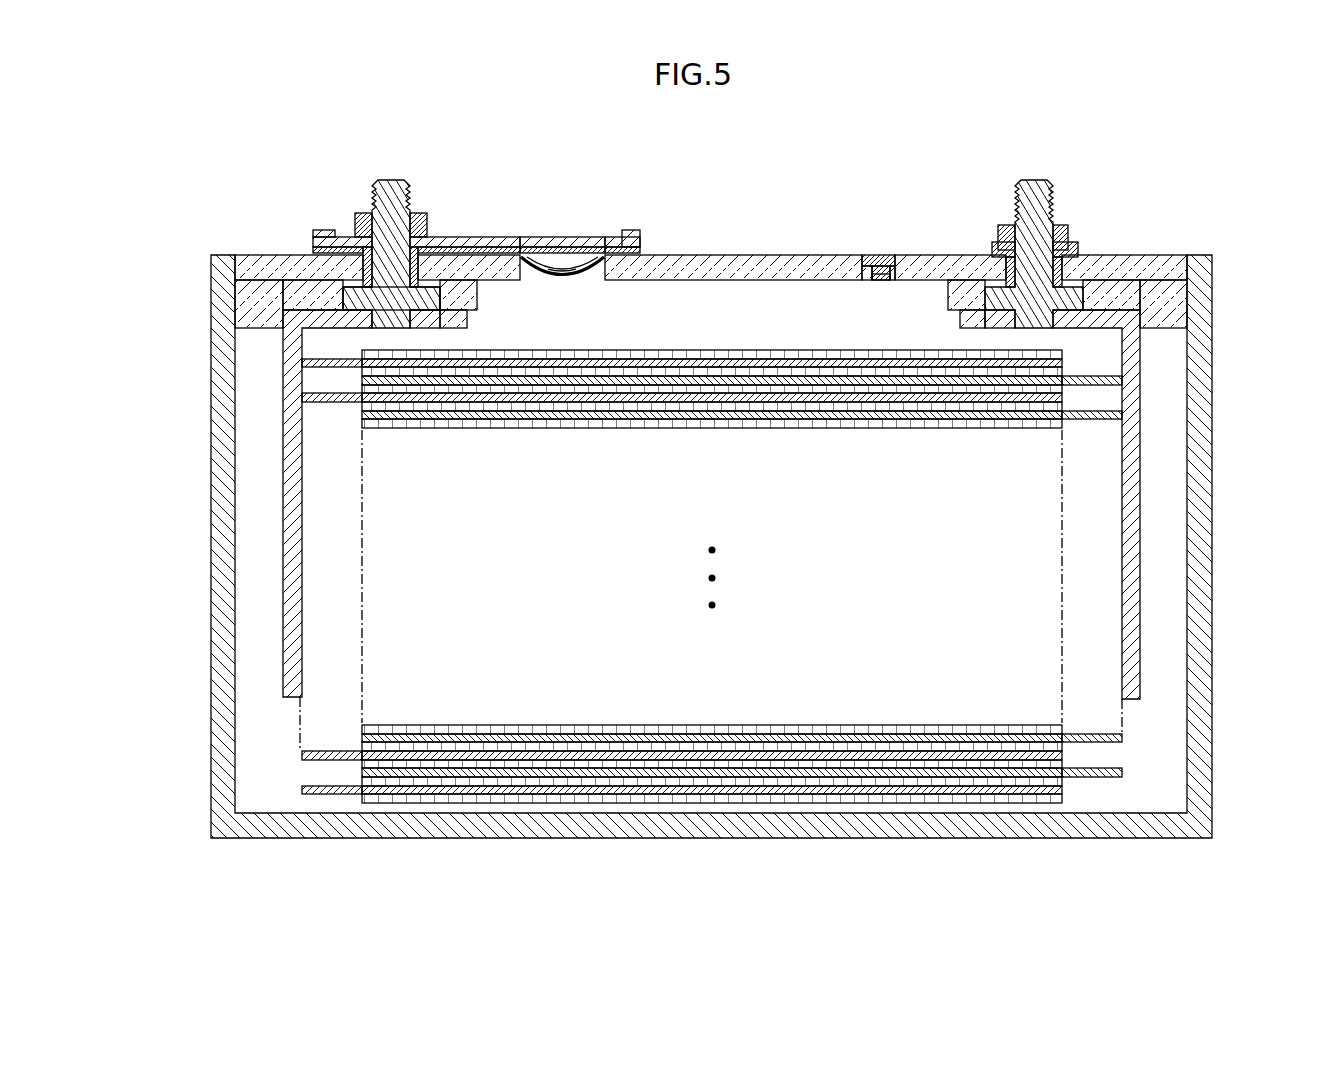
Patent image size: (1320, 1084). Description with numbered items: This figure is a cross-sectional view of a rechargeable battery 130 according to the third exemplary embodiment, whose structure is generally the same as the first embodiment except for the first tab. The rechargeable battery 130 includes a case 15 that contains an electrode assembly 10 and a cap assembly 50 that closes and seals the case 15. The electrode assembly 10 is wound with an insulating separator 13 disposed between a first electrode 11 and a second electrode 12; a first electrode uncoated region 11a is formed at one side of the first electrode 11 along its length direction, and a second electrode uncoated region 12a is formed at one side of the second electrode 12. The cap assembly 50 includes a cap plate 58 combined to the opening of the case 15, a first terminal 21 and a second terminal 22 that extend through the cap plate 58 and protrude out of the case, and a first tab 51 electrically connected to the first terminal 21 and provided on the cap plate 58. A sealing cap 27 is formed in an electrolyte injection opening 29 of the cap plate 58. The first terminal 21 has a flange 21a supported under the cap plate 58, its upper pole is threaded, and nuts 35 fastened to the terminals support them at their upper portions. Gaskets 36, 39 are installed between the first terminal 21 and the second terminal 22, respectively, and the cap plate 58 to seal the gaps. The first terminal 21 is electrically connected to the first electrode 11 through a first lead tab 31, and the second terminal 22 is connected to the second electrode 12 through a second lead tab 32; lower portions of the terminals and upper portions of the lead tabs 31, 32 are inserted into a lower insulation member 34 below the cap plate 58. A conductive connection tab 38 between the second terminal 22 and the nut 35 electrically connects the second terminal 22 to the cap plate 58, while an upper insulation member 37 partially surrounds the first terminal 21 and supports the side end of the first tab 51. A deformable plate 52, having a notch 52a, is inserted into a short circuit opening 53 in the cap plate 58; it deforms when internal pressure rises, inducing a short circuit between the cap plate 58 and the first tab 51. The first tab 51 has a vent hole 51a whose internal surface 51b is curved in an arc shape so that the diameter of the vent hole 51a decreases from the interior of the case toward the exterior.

The rechargeable battery 130 is at (815, 157).
The electrode assembly 10 is at (787, 812).
The first electrode 11 is at (452, 770).
The first electrode uncoated region 11a is at (318, 794).
The second electrode 12 is at (948, 777).
The second electrode uncoated region 12a is at (1093, 777).
The separator 13 is at (668, 776).
The case 15 is at (1200, 520).
The first terminal 21 is at (392, 180).
The flange 21a is at (440, 300).
The second terminal 22 is at (1033, 180).
The sealing cap 27 is at (880, 257).
The electrolyte injection opening 29 is at (880, 282).
The first lead tab 31 is at (294, 545).
The second lead tab 32 is at (1135, 630).
The lower insulation member 34 is at (242, 300).
The nut 35 is at (420, 215).
The gasket 36 is at (365, 270).
The upper insulation member 37 is at (632, 232).
The connection tab 38 is at (1068, 248).
The gasket 39 is at (1005, 272).
The cap assembly 50 is at (723, 250).
The first tab 51 is at (478, 238).
The vent hole 51a is at (578, 245).
The internal surface 51b is at (542, 252).
The deformable plate 52 is at (600, 254).
The notch 52a is at (562, 268).
The short circuit opening 53 is at (596, 274).
The cap plate 58 is at (790, 256).